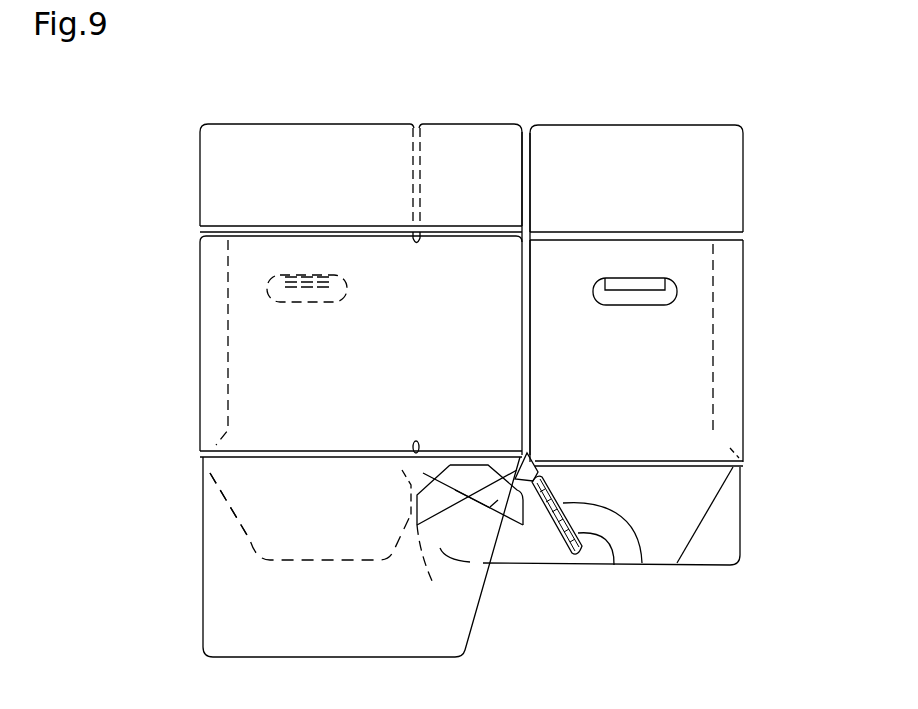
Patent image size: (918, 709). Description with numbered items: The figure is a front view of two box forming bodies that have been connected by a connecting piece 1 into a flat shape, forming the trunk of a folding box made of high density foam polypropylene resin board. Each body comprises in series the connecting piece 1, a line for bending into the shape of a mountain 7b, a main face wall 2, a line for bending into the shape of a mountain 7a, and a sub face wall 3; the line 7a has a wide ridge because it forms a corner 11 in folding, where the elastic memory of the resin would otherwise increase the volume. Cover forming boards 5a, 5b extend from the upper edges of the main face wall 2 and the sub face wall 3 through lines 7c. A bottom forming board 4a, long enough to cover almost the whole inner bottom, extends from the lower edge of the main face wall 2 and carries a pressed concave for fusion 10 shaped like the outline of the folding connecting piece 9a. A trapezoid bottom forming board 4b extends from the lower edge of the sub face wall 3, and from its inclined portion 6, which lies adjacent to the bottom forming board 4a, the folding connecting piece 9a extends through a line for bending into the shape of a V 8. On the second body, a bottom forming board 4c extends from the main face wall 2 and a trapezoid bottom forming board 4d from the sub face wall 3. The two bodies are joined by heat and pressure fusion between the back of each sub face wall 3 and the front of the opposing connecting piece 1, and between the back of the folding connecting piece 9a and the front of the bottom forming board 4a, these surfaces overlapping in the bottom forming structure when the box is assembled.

The connecting piece 1 is at (222, 379).
The main face wall 2 is at (378, 374).
The sub face wall 3 is at (637, 383).
The bottom forming board 4a is at (350, 630).
The trapezoid bottom forming board 4b is at (650, 527).
The bottom forming board 4c is at (725, 537).
The trapezoid bottom forming board 4d is at (277, 517).
The cover forming board 5a is at (368, 193).
The cover forming board 5b is at (650, 193).
The inclined portion 6 is at (642, 563).
The line for bending into the shape of a mountain 7a is at (518, 352).
The line for bending into the shape of a mountain 7b is at (323, 452).
The fold line 7c is at (473, 230).
The line for bending into the shape of a V 8 is at (614, 565).
The folding connecting piece 9a is at (547, 530).
The concave for fusion 10 is at (448, 575).
The corner 11 is at (537, 284).